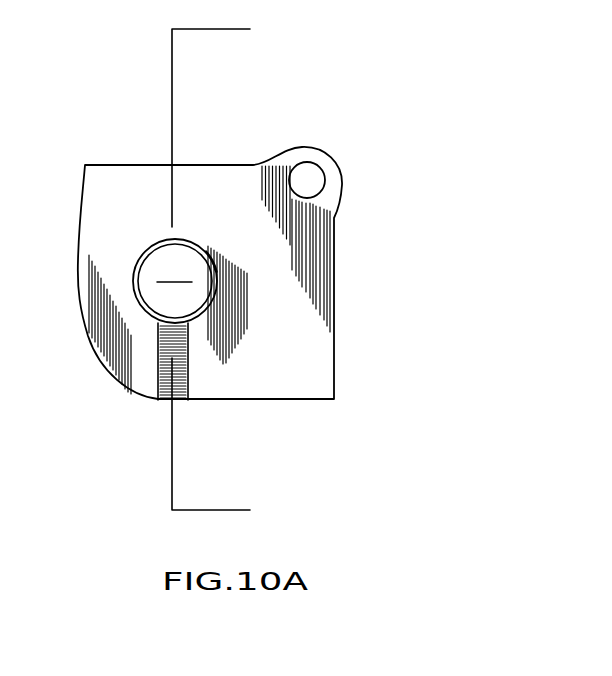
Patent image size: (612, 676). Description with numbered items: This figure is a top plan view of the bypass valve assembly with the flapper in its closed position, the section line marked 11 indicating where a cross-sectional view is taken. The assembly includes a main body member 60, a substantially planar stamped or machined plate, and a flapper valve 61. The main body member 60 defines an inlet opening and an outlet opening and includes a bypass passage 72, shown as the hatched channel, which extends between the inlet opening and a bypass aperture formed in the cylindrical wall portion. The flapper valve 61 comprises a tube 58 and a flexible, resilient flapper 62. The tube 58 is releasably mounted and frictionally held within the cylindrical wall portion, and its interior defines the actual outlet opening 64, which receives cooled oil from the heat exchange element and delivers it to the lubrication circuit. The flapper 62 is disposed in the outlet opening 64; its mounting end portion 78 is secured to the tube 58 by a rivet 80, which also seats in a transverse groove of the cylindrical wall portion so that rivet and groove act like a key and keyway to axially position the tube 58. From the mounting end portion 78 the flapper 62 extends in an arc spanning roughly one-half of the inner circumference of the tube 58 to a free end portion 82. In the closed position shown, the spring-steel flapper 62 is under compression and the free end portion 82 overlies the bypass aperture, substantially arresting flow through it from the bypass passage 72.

The section line 11- 11 is at (249, 25).
The tube 58 is at (152, 246).
The main body member 60 is at (318, 353).
The flapper valve 61 is at (131, 272).
The flapper 62 is at (216, 314).
The outlet opening 64 is at (174, 268).
The bypass passage 72 is at (157, 347).
The mounting end portion 78 is at (185, 236).
The rivet 80 is at (202, 246).
The free end portion 82 is at (169, 294).